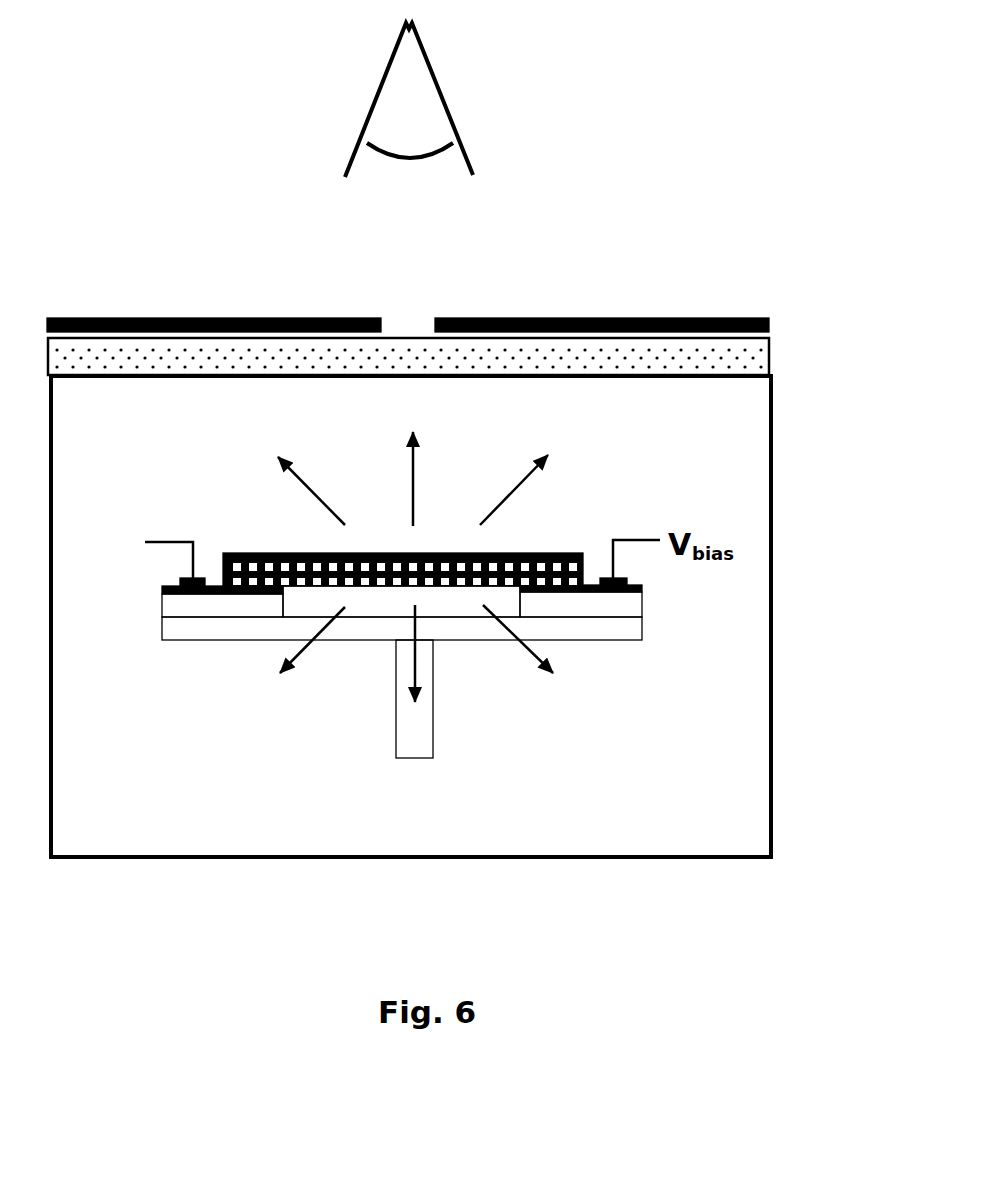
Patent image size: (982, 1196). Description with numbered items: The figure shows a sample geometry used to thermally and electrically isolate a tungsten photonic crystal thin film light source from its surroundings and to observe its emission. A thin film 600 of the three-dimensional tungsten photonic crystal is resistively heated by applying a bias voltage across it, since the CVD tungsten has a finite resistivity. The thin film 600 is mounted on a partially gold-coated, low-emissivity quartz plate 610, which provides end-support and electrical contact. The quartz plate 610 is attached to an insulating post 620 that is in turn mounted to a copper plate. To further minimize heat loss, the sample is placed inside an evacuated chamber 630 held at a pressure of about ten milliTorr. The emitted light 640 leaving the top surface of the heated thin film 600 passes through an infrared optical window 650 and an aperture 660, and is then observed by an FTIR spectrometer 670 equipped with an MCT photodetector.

The thin film 600 is at (543, 553).
The quartz plate 610 is at (642, 600).
The insulating post 620 is at (433, 732).
The evacuated chamber 630 is at (772, 450).
The emitted light 640 is at (415, 547).
The infrared optical window 650 is at (769, 355).
The aperture 660 is at (769, 322).
The FTIR spectrometer 670 is at (448, 100).